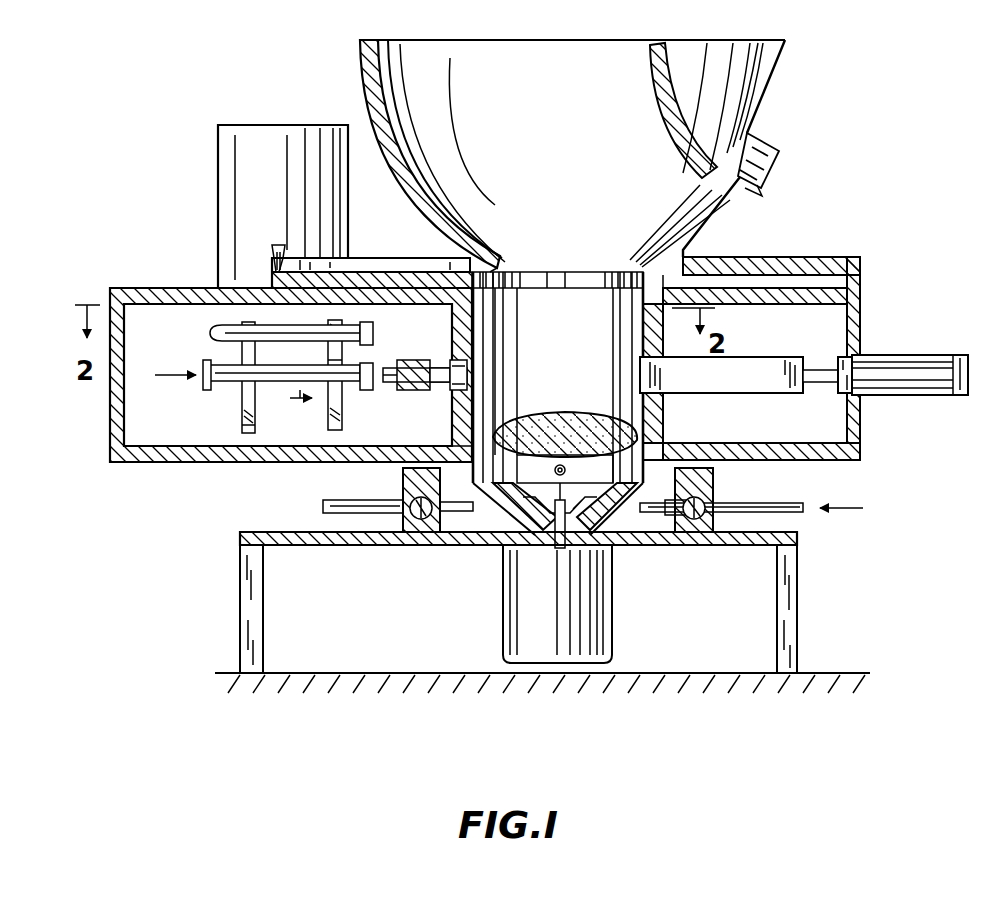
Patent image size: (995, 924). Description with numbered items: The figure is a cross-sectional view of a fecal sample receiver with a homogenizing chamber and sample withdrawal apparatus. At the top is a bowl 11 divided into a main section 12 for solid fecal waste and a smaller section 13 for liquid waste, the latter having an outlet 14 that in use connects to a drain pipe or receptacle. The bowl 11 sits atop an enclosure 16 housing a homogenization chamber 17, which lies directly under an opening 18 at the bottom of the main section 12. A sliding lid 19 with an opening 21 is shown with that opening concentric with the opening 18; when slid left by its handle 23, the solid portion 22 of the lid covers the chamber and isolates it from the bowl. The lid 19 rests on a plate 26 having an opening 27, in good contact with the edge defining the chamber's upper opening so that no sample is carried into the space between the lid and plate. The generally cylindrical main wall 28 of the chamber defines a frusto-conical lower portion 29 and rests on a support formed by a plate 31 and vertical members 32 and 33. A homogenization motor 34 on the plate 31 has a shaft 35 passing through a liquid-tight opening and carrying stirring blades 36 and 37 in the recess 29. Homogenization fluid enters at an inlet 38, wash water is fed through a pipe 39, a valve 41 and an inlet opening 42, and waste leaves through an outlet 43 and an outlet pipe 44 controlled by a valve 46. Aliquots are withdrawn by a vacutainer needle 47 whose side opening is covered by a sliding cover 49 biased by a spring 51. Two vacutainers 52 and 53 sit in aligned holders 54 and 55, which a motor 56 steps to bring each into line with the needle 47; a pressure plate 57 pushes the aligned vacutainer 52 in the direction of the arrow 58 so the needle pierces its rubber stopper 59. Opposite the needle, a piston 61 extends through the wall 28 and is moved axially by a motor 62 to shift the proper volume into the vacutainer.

The bowl 11 is at (362, 62).
The main section 12 is at (494, 103).
The smaller section 13 is at (701, 73).
The outlet 14 is at (778, 158).
The enclosure 16 is at (752, 258).
The homogenization chamber 17 is at (560, 398).
The opening 18 is at (499, 265).
The sliding lid 19 is at (364, 268).
The opening 21 is at (556, 272).
The solid portion 22 is at (382, 304).
The handle 23 is at (280, 244).
The plate 26 is at (150, 290).
The opening 27 is at (576, 298).
The main wall 28 is at (667, 415).
The frusto-conical lower portion 29 is at (470, 440).
The plate 31 is at (740, 545).
The vertical member 32 is at (265, 620).
The vertical member 33 is at (799, 598).
The homogenization motor 34 is at (597, 625).
The shaft 35 is at (557, 540).
The stirring blade 36 is at (574, 470).
The stirring blade 37 is at (602, 535).
The inlet 38 is at (554, 472).
The pipe 39 is at (757, 503).
The valve 41 is at (716, 472).
The inlet opening 42 is at (637, 533).
The outlet 43 is at (478, 535).
The outlet pipe 44 is at (370, 520).
The valve 46 is at (420, 532).
The vacutainer needle 47 is at (392, 385).
The sliding cover 49 is at (414, 388).
The spring 51 is at (455, 360).
The vacutainer 52 is at (256, 388).
The vacutainer 53 is at (350, 322).
The holder 54 is at (343, 426).
The holder 55 is at (242, 430).
The motor 56 is at (250, 125).
The pressure plate 57 is at (210, 385).
The arrow 58 is at (170, 375).
The rubber stopper 59 is at (343, 384).
The piston 61 is at (797, 362).
The motor 62 is at (894, 355).